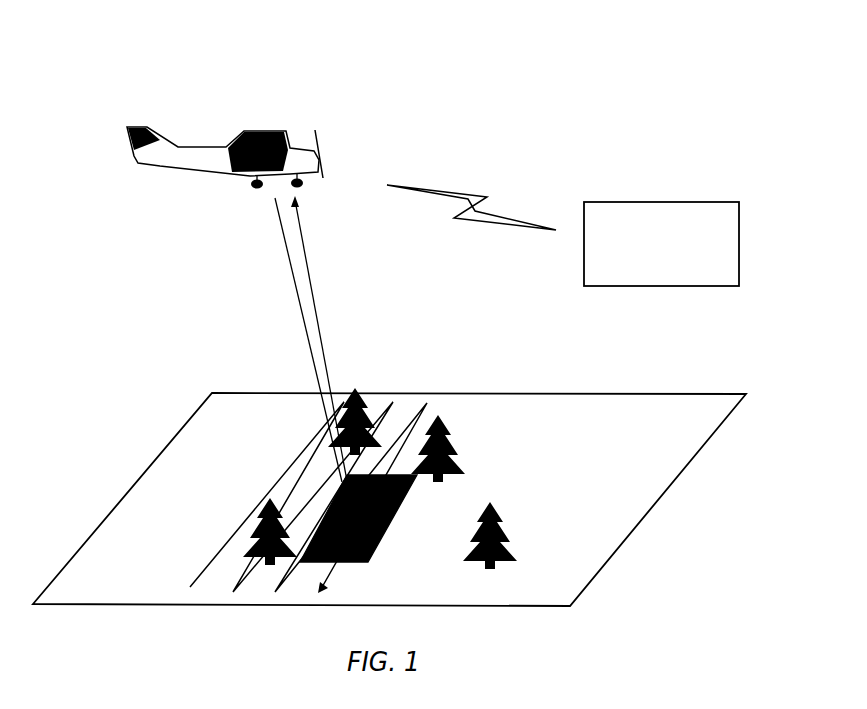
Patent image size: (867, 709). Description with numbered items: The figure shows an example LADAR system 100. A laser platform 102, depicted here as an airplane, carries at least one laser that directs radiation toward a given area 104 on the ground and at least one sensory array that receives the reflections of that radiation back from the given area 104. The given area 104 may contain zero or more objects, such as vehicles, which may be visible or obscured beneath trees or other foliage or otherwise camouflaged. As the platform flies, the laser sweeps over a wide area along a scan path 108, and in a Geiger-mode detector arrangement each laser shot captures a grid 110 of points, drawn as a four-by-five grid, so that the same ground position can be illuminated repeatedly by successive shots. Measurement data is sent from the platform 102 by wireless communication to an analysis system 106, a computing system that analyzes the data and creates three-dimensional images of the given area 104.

The LADAR system 100 is at (578, 114).
The laser platform 102 is at (238, 122).
The given area 104 is at (384, 554).
The analysis system 106 is at (705, 293).
The scan path 108 is at (292, 458).
The grid 110 is at (400, 530).